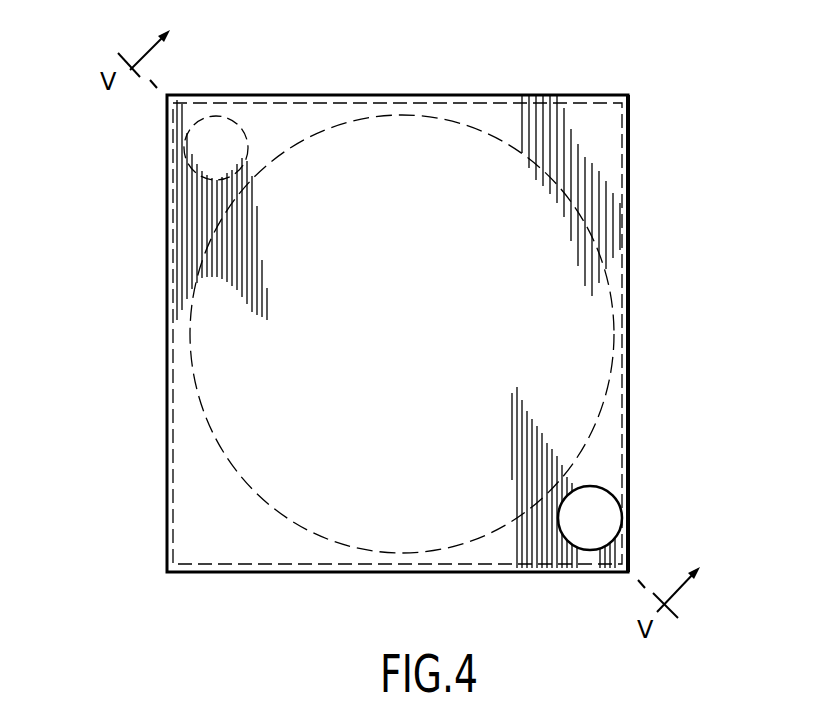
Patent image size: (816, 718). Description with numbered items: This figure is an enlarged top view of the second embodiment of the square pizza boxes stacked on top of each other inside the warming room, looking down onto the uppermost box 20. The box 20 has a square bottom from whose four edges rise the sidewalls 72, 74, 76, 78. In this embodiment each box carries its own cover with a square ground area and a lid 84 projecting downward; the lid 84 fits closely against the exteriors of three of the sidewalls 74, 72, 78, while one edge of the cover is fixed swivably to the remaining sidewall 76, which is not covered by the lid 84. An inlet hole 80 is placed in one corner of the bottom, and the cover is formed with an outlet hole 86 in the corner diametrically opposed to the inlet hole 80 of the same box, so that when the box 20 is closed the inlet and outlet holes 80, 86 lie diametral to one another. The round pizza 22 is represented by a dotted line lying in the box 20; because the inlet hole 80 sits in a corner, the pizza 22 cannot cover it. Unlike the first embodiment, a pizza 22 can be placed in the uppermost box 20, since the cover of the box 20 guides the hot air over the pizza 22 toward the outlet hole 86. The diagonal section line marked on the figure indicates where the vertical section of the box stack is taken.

The box 20 is at (622, 97).
The pizza 22 is at (192, 390).
The sidewall 72 is at (175, 532).
The sidewall 74 is at (632, 560).
The sidewall 76 is at (630, 342).
The sidewall 78 is at (631, 110).
The inlet hole 80 is at (209, 110).
The lid 84 is at (167, 307).
The outlet hole 86 is at (618, 497).